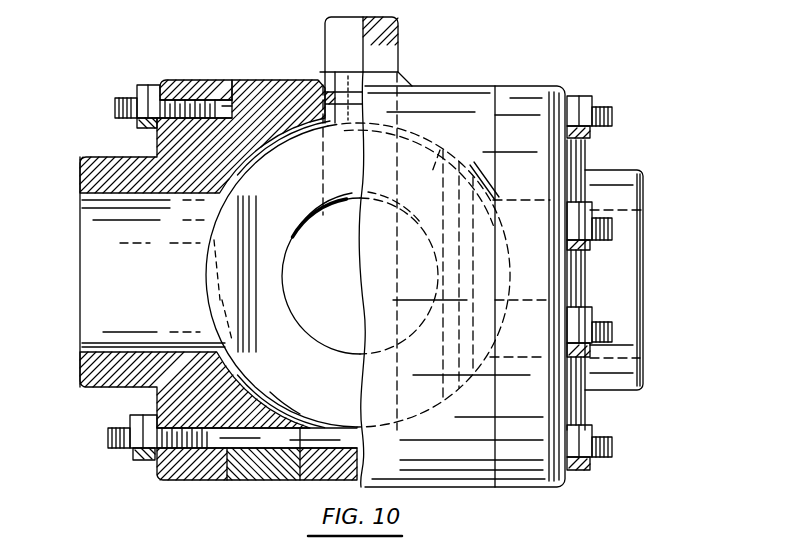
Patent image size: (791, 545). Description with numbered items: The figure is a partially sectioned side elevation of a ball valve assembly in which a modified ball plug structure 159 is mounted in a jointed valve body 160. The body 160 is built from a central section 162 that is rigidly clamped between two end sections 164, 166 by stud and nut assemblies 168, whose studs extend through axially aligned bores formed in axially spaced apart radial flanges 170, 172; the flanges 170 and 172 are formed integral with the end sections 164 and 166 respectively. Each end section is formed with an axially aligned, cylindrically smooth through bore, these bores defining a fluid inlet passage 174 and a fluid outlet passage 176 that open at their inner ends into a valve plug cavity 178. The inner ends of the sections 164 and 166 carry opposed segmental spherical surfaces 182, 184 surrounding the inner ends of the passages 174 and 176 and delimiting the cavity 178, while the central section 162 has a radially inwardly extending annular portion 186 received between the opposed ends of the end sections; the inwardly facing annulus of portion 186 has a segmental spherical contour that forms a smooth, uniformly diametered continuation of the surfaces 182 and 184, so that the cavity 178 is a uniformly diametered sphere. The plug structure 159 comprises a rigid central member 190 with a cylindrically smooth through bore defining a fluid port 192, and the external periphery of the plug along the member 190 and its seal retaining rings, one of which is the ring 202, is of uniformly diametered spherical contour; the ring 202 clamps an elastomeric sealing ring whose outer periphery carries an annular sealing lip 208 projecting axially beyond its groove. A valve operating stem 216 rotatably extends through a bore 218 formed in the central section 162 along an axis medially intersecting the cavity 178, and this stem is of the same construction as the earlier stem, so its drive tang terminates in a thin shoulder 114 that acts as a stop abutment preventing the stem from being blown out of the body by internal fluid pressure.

The shoulder 114 is at (320, 210).
The ball plug structure 159 is at (205, 302).
The jointed valve body 160 is at (258, 482).
The central section 162 is at (433, 488).
The end section 164 is at (92, 390).
The end section 166 is at (618, 392).
The stud and nut assemblies 168 is at (150, 85).
The radial flange 170 is at (203, 80).
The radial flange 172 is at (545, 88).
The fluid inlet passage 174 is at (90, 350).
The fluid outlet passage 176 is at (640, 210).
The valve plug cavity 178 is at (282, 398).
The segmental spherical surface 182 is at (273, 137).
The segmental spherical surface 184 is at (440, 152).
The annular portion 186 is at (283, 418).
The central member 190 is at (301, 440).
The fluid port 192 is at (310, 345).
The seal retaining ring 202 is at (212, 236).
The sealing lip 208 is at (240, 256).
The valve operating stem 216 is at (318, 25).
The bore 218 is at (328, 74).